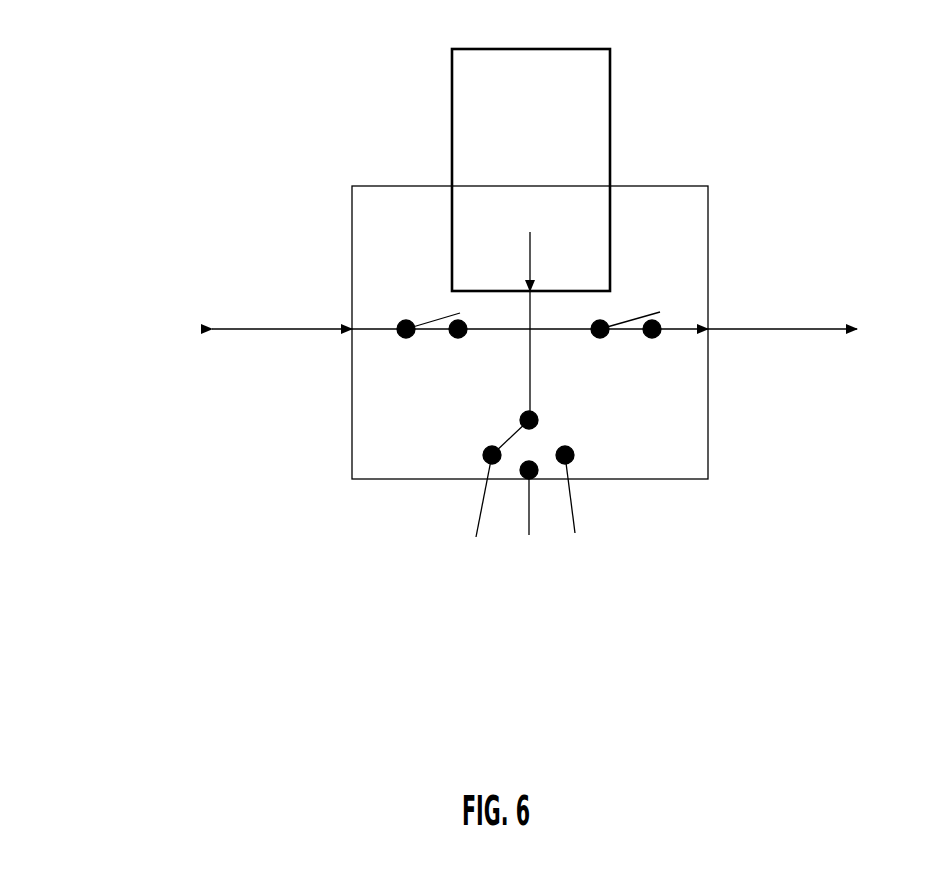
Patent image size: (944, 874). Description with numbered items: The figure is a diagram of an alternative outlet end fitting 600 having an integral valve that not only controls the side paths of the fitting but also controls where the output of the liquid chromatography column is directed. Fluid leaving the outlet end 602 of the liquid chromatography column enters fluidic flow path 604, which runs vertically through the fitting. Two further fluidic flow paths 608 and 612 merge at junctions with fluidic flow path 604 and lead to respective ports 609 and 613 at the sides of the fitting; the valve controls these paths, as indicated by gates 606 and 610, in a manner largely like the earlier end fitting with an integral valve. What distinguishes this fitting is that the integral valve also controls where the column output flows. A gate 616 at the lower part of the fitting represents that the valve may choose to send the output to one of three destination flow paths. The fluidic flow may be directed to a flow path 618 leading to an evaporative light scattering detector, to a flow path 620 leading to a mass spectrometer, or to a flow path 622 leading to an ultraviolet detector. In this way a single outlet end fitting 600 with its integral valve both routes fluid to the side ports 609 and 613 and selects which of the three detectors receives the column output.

The outlet end fitting 600 is at (352, 458).
The outlet end of liquid chromatography column 602 is at (512, 215).
The fluidic flow path 604 is at (532, 295).
The gate 606 is at (637, 318).
The fluidic flow path 608 is at (670, 331).
The port 609 is at (711, 328).
The gate 610 is at (434, 321).
The fluidic flow path 612 is at (382, 331).
The port 613 is at (343, 331).
The gate 616 is at (511, 436).
The flow path 618 is at (475, 538).
The flow path 620 is at (527, 540).
The flow path 622 is at (577, 535).